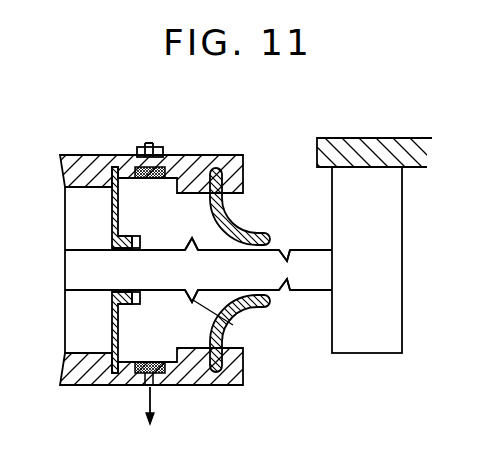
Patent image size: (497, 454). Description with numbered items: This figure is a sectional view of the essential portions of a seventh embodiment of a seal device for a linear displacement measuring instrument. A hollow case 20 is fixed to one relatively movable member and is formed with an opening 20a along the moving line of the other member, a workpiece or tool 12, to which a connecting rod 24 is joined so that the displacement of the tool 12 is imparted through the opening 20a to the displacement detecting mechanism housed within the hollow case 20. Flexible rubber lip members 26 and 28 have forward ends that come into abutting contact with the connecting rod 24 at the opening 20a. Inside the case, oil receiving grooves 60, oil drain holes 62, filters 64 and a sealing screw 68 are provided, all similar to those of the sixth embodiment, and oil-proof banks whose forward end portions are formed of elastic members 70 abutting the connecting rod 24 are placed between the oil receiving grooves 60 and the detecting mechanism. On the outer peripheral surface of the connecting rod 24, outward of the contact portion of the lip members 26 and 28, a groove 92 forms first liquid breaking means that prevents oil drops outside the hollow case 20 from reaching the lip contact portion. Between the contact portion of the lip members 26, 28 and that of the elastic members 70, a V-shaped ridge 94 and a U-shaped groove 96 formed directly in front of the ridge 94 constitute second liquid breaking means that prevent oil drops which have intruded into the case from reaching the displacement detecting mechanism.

The tool 12 is at (425, 168).
The hollow case 20 is at (93, 155).
The opening 20a is at (233, 207).
The connecting rod 24 is at (80, 249).
The lip member 26 is at (238, 222).
The lip member 28 is at (243, 308).
The oil receiving groove 60 is at (162, 187).
The oil drain hole 62 is at (151, 387).
The filter 64 is at (146, 180).
The sealing screw 68 is at (163, 150).
The elastic member 70 is at (112, 213).
The groove 92 is at (313, 236).
The V-shaped ridge 94 is at (197, 297).
The U-shaped groove 96 is at (233, 325).